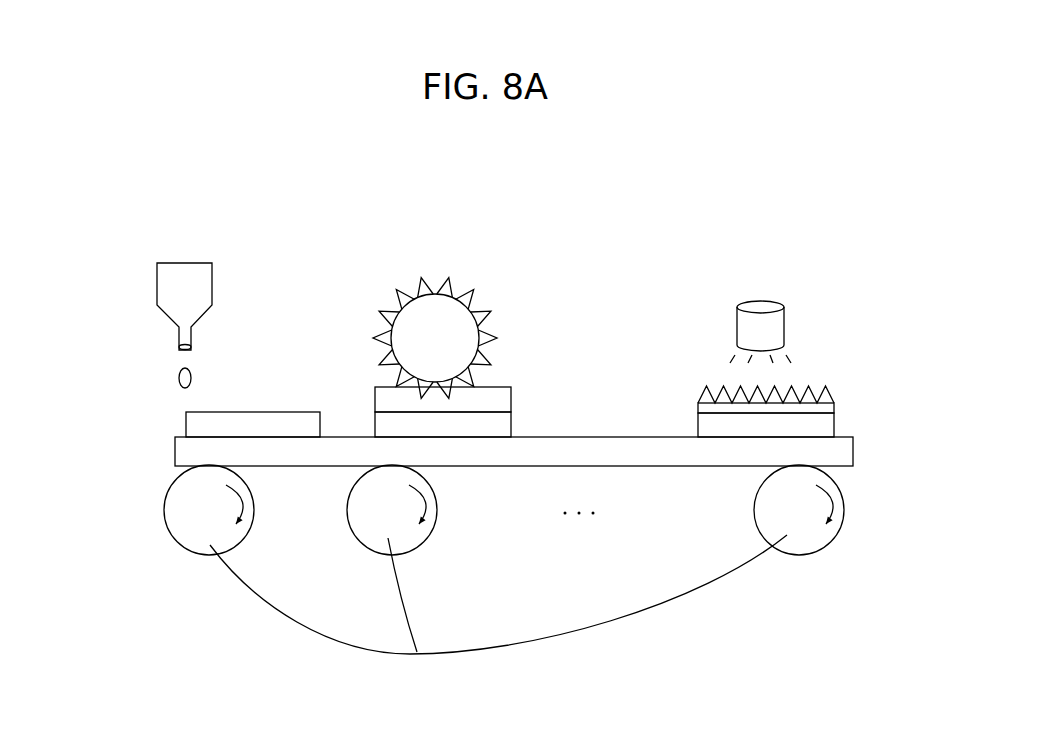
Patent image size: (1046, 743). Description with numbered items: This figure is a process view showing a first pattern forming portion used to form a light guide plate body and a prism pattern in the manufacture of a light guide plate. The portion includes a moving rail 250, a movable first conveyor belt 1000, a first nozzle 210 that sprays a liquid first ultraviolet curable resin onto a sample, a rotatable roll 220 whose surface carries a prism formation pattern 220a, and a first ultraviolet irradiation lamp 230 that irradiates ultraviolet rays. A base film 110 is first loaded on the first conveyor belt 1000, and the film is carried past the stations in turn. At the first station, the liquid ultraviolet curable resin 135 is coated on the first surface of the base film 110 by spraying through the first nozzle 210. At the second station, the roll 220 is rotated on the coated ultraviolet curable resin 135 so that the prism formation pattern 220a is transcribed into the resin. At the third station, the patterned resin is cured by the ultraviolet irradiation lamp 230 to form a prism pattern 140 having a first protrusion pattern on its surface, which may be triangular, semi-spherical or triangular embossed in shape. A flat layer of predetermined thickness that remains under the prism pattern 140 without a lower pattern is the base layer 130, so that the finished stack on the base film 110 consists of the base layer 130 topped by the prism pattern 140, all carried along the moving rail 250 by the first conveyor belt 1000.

The first nozzle 210 is at (165, 279).
The ultraviolet curable resin 135 is at (178, 378).
The base film 110 is at (187, 418).
The first conveyor belt 1000 is at (185, 453).
The roll 220 is at (433, 303).
The prism formation pattern 220a is at (465, 293).
The first ultraviolet irradiation lamp 230 is at (782, 328).
The prism pattern 140 is at (840, 395).
The base layer 130 is at (836, 405).
The moving rail 250 is at (498, 609).